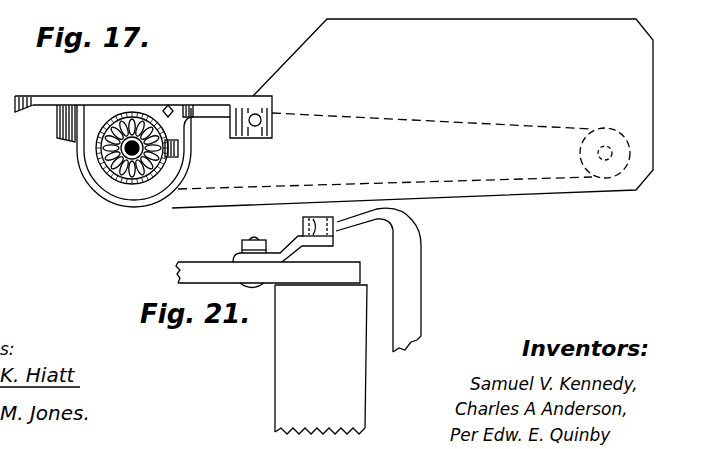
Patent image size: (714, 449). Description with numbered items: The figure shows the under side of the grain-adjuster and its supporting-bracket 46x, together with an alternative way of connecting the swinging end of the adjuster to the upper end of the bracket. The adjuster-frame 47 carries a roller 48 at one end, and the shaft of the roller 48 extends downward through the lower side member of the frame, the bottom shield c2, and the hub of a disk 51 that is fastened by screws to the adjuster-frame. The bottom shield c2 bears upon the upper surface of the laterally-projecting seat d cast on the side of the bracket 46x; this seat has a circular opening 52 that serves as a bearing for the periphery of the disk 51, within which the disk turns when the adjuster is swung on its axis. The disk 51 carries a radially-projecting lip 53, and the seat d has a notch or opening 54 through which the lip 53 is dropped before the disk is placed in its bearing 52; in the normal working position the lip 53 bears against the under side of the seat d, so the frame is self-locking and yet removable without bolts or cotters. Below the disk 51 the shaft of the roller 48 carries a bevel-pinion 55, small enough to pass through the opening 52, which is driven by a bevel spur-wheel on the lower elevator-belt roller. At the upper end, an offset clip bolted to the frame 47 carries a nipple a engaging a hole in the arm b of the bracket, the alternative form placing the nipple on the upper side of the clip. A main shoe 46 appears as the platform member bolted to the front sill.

In FIG. 17, the disk 51 is at (125, 182).
In FIG. 17, the circular opening 52 is at (106, 116).
In FIG. 17, the radially-projecting lip 53 is at (178, 150).
In FIG. 17, the notch or opening 54 is at (167, 112).
In FIG. 17, the bevel-pinion 55 is at (135, 119).
In FIG. 17, the supporting-bracket 46x is at (70, 122).
In FIG. 17, the laterally-projecting seat d is at (88, 193).
In FIG. 17, the bottom shield c2 is at (412, 113).
In FIG. 21, the main shoe 46 is at (327, 280).
In FIG. 21, the adjuster-frame 47 is at (268, 262).
In FIG. 21, the roller 48 is at (321, 359).
In FIG. 21, the nipple a is at (321, 217).
In FIG. 21, the arm of the bracket b is at (359, 237).